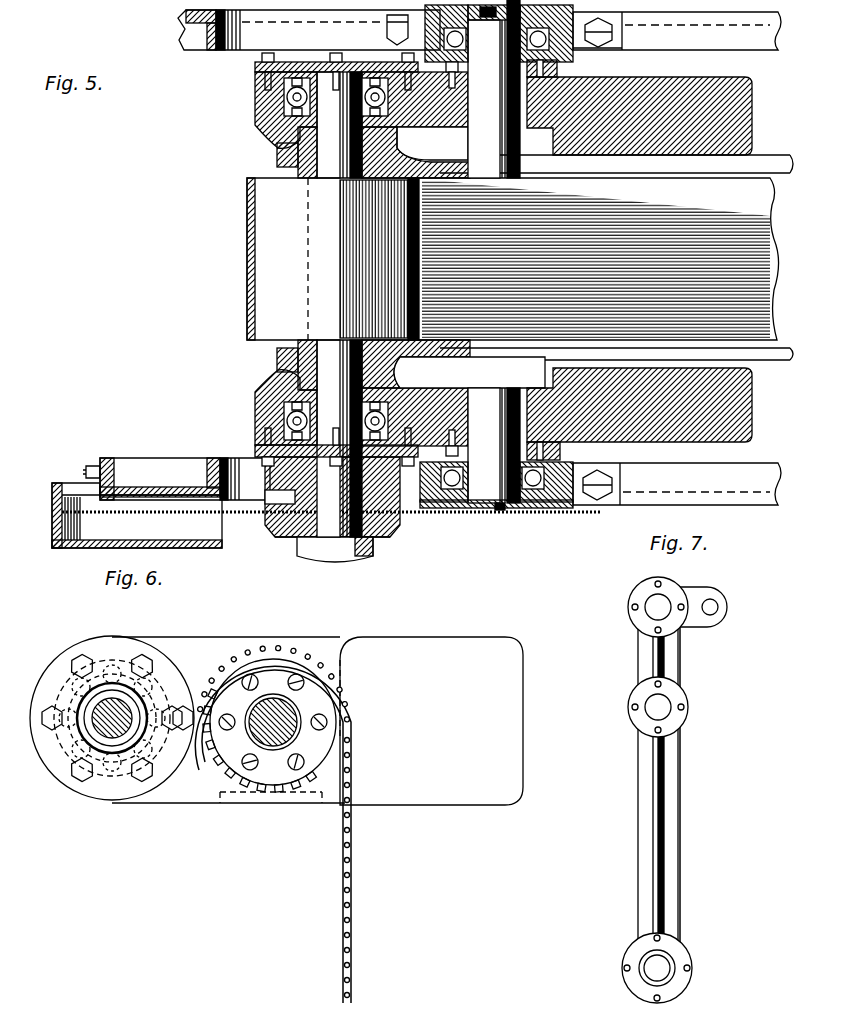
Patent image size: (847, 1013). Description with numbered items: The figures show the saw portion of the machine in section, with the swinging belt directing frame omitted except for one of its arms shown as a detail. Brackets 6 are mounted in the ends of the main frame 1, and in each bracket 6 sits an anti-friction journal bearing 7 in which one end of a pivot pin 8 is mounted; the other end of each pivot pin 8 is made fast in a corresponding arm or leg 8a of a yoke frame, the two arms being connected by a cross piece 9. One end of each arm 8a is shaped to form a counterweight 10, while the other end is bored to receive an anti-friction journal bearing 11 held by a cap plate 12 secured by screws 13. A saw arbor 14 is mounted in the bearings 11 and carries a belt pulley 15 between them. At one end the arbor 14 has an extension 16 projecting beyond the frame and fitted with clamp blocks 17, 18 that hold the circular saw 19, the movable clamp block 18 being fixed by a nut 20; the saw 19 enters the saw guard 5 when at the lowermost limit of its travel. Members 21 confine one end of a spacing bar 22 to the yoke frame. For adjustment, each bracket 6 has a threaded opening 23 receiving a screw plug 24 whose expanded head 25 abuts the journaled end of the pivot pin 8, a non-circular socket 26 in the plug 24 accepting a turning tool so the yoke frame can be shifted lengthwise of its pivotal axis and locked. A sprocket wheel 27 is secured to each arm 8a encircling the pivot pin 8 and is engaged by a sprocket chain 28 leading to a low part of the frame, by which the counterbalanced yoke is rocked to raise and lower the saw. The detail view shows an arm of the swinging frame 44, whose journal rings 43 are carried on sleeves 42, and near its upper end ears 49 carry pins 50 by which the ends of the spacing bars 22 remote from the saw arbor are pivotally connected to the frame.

In FIG. 5, the frame 1 is at (200, 48).
In FIG. 5, the saw guard 5 is at (55, 549).
In FIG. 5, the bracket 6 is at (558, 10).
In FIG. 5, the anti-friction journal bearing 7 is at (612, 26).
In FIG. 5, the pivot pin 8 is at (494, 251).
In FIG. 6, the pivot pin 8 is at (285, 718).
In FIG. 5, the arm or leg of yoke frame 8a is at (405, 118).
In FIG. 6, the arm or leg of yoke frame 8a is at (190, 805).
In FIG. 5, the cross piece 9 is at (469, 372).
In FIG. 6, the cross piece 9 is at (310, 806).
In FIG. 5, the counterweight 10 is at (752, 108).
In FIG. 6, the counterweight 10 is at (431, 721).
In FIG. 5, the anti-friction journal bearing 11 is at (258, 108).
In FIG. 6, the anti-friction journal bearing 11 is at (75, 688).
In FIG. 5, the cap plate 12 is at (258, 66).
In FIG. 6, the cap plate 12 is at (50, 755).
In FIG. 5, the screws 13 is at (402, 60).
In FIG. 6, the screws 13 is at (140, 786).
In FIG. 5, the saw arbor 14 is at (339, 304).
In FIG. 5, the belt pulley 15 is at (513, 259).
In FIG. 5, the extension 16 is at (322, 550).
In FIG. 6, the extension 16 is at (112, 700).
In FIG. 5, the clamp block 17 is at (266, 520).
In FIG. 5, the movable clamp block 18 is at (292, 540).
In FIG. 5, the circular saw 19 is at (158, 514).
In FIG. 5, the nut 20 is at (365, 560).
In FIG. 5, the confining member 21 is at (278, 148).
In FIG. 5, the spacing bar 22 is at (727, 176).
In FIG. 5, the threaded opening 23 is at (430, 10).
In FIG. 5, the screw plug 24 is at (385, 27).
In FIG. 5, the expanded head 25 is at (615, 30).
In FIG. 5, the non-circular socket 26 is at (483, 545).
In FIG. 5, the sprocket wheel 27 is at (456, 70).
In FIG. 6, the sprocket wheel 27 is at (270, 770).
In FIG. 5, the sprocket chain 28 is at (560, 68).
In FIG. 6, the sprocket chain 28 is at (353, 865).
In FIG. 7, the sleeve 42 is at (674, 958).
In FIG. 7, the journal ring 43 is at (628, 955).
In FIG. 7, the swinging frame 44 is at (682, 862).
In FIG. 7, the ear 49 is at (703, 622).
In FIG. 7, the pin 50 is at (718, 610).